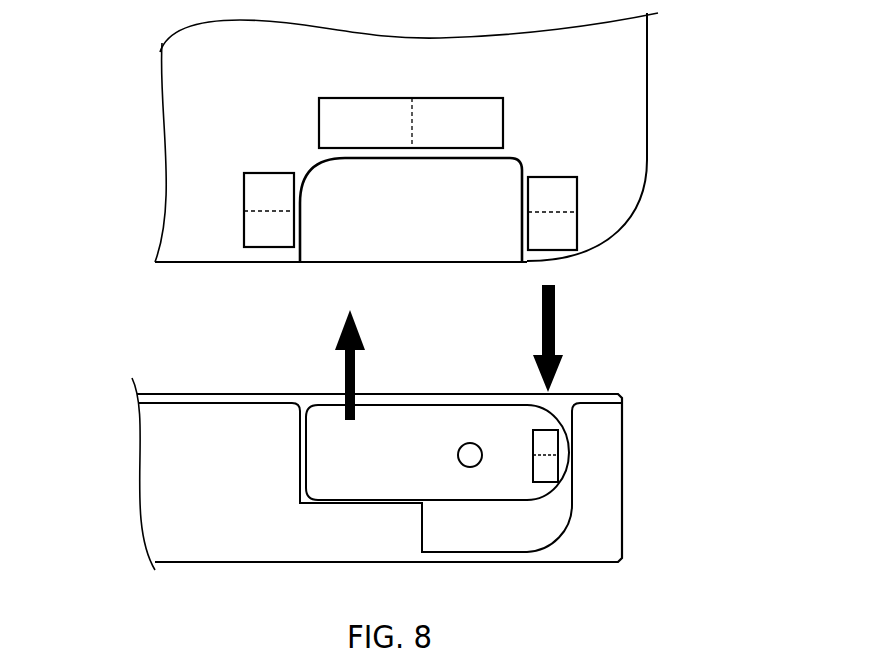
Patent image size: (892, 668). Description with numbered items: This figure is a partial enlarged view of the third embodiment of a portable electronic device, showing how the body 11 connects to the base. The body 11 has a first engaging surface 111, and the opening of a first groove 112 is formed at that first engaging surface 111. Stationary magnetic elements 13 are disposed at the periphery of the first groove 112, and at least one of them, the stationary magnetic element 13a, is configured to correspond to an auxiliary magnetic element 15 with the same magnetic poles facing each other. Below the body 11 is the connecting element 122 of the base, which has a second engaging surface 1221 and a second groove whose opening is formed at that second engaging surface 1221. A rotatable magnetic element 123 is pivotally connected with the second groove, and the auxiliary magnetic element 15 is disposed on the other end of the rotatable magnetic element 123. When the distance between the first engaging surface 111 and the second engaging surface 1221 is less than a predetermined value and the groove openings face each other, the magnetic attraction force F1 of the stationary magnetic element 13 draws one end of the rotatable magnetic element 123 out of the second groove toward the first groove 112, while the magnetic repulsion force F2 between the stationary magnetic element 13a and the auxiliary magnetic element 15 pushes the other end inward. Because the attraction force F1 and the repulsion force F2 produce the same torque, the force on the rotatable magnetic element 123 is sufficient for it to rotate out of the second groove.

The body 11 is at (618, 53).
The first engaging surface 111 is at (175, 272).
The first groove 112 is at (322, 178).
The stationary magnetic element 13 is at (498, 127).
The stationary magnetic element 13a is at (573, 183).
The auxiliary magnetic element 15 is at (558, 452).
The connecting element 122 is at (603, 530).
The second engaging surface 1221 is at (590, 391).
The rotatable magnetic element 123 is at (323, 458).
The magnetic attraction force F1 is at (345, 386).
The magnetic repulsion force F2 is at (555, 298).